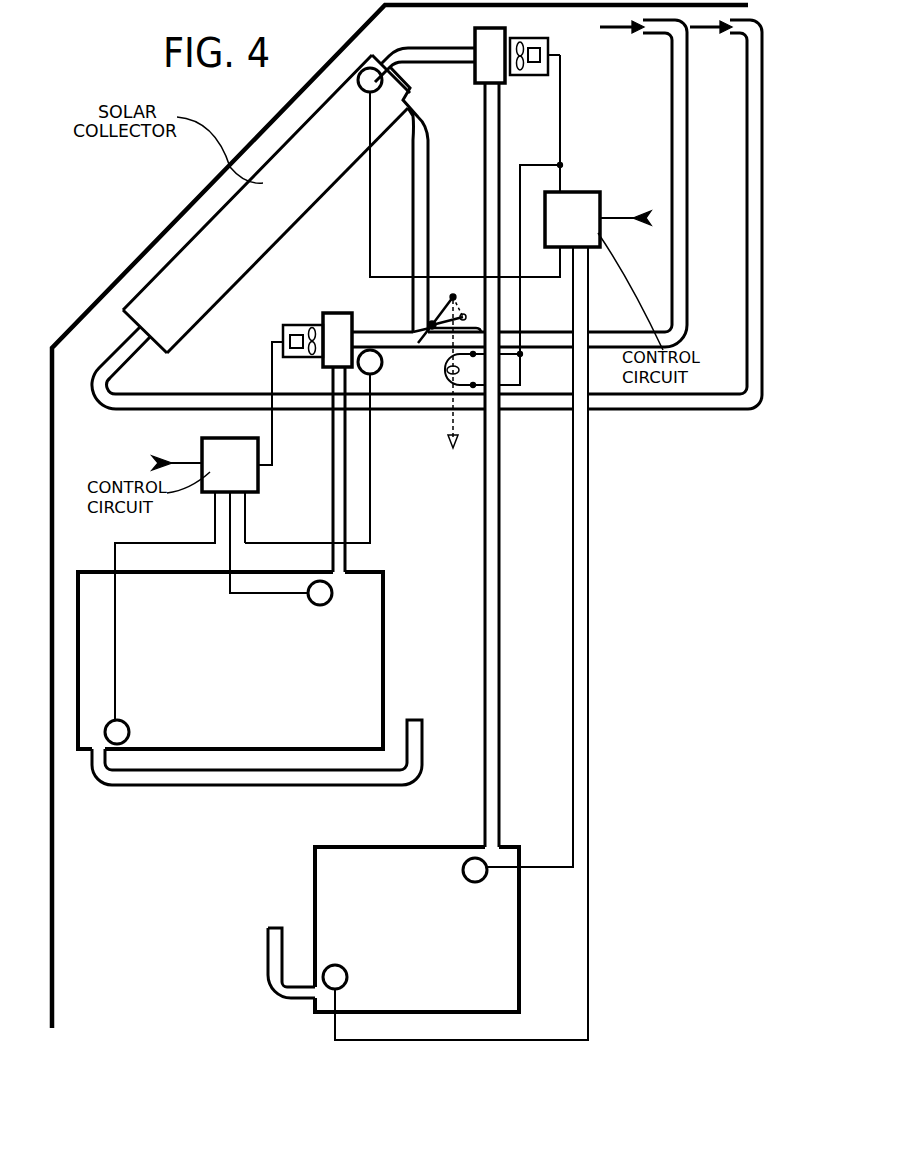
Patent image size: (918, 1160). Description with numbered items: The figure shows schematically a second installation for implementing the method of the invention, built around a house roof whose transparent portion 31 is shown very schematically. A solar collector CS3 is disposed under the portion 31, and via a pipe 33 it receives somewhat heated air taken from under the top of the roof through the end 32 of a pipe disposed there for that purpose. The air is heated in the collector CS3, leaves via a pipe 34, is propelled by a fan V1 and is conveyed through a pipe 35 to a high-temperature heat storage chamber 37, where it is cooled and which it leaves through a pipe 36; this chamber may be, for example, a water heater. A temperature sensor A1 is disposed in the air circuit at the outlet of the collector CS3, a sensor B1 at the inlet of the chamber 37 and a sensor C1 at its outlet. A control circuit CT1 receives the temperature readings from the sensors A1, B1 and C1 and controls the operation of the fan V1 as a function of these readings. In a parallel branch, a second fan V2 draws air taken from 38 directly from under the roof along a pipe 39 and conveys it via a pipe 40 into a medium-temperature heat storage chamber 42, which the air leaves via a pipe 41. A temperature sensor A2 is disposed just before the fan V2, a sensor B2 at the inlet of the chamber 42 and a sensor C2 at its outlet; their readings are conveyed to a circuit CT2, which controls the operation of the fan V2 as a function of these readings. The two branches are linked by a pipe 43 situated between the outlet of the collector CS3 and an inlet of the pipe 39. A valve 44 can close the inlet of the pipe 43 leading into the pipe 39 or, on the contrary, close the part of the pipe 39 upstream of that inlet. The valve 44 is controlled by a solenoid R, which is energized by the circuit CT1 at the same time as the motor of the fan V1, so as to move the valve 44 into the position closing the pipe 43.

The transparent portion of the roof 31 is at (163, 233).
The solar collector CS3 is at (275, 240).
The end of a pipe 32 is at (752, 88).
The pipe 33 is at (230, 403).
The pipe 34 is at (450, 53).
The pipe 35 is at (493, 613).
The pipe 36 is at (273, 963).
The high-temperature heat storage chamber 37 is at (407, 862).
The air intake 38 is at (678, 88).
The pipe 39 is at (632, 340).
The pipe 40 is at (340, 478).
The pipe 41 is at (270, 777).
The medium-temperature heat storage chamber 42 is at (363, 675).
The pipe 43 is at (418, 250).
The valve 44 is at (430, 322).
The solenoid R is at (454, 391).
The temperature sensor A1 is at (363, 90).
The temperature sensor A2 is at (378, 368).
The sensor B1 is at (475, 882).
The sensor B2 is at (318, 596).
The sensor C1 is at (337, 978).
The sensor C2 is at (118, 732).
The control circuit CT1 is at (590, 207).
The circuit CT2 is at (257, 477).
The fan V1 is at (515, 75).
The second fan V2 is at (318, 312).